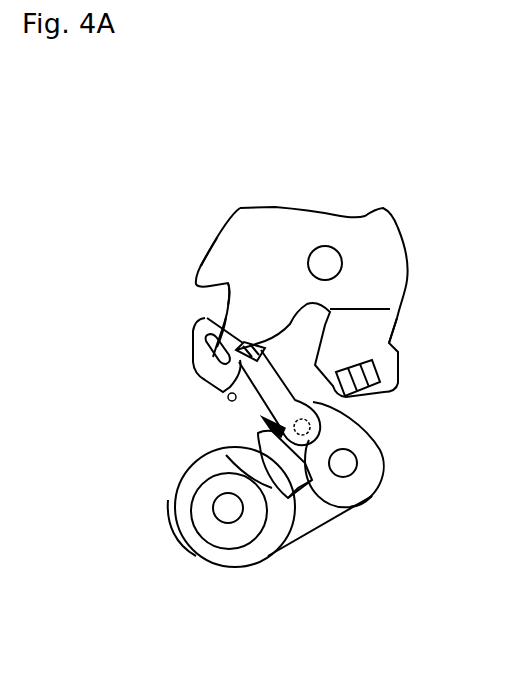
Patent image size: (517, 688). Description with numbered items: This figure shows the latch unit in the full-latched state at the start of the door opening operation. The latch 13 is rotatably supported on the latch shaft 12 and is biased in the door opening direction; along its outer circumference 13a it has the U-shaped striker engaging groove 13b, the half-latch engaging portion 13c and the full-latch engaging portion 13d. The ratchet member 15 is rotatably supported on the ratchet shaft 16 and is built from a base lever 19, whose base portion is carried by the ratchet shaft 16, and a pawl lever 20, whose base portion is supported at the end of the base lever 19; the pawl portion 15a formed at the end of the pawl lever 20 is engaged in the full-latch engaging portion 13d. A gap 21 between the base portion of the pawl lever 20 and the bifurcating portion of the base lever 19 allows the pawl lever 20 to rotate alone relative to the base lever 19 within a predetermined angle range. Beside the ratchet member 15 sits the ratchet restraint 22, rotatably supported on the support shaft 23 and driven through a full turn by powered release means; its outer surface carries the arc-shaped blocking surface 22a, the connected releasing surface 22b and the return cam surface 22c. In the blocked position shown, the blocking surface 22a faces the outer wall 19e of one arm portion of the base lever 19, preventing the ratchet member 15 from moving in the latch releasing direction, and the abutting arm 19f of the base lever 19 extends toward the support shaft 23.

The latch shaft 12 is at (333, 252).
The latch 13 is at (382, 232).
The outer circumference 13a is at (218, 232).
The striker engaging groove 13b is at (390, 310).
The half-latch engaging portion 13c is at (213, 272).
The full-latch engaging portion 13d is at (222, 339).
The ratchet member 15 is at (388, 414).
The pawl portion 15a is at (222, 392).
The ratchet shaft 16 is at (346, 464).
The base lever 19 is at (372, 455).
The outer wall 19e is at (351, 508).
The abutting arm 19f is at (193, 547).
The pawl lever 20 is at (190, 348).
The gap 21 is at (268, 420).
The ratchet restraint 22 is at (187, 483).
The blocking surface 22a is at (263, 461).
The releasing surface 22b is at (285, 492).
The return cam surface 22c is at (171, 493).
The support shaft 23 is at (231, 510).